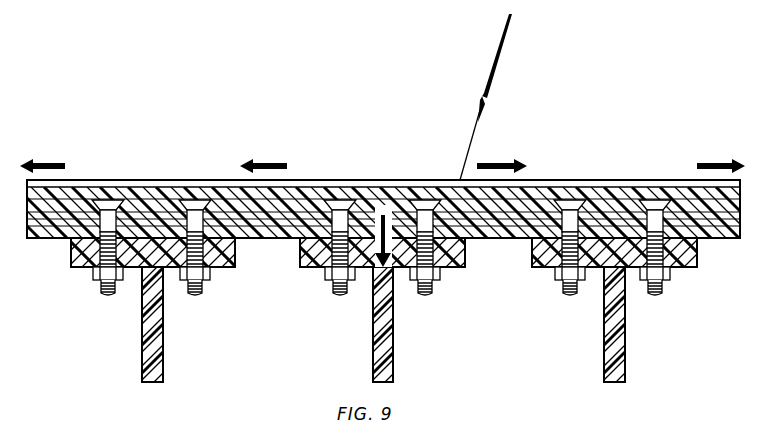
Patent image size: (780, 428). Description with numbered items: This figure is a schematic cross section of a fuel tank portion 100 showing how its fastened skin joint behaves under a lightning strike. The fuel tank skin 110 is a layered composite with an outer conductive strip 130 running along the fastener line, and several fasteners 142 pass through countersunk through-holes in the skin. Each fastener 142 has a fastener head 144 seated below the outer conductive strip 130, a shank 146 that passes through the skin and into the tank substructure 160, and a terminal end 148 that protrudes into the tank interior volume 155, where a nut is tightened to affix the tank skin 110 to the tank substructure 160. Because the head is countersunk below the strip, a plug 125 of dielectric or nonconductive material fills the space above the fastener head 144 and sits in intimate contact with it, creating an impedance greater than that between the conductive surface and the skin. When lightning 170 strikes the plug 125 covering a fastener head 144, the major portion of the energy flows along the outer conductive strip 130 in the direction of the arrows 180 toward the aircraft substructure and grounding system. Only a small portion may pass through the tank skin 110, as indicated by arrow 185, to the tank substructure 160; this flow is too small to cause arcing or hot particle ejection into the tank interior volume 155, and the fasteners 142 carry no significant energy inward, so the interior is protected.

The fuel tank portion 100 is at (390, 204).
The fuel tank skin 110 is at (392, 316).
The plug 125 is at (385, 235).
The outer conductive strip 130 is at (152, 179).
The fastener 142 is at (325, 287).
The fastener head 144 is at (317, 179).
The shank 146 is at (330, 260).
The terminal end 148 is at (340, 297).
The tank interior volume 155 is at (528, 369).
The tank substructure 160 is at (367, 337).
The lightning 170 is at (478, 115).
The arrows 180 is at (45, 162).
The arrow 185 is at (400, 243).